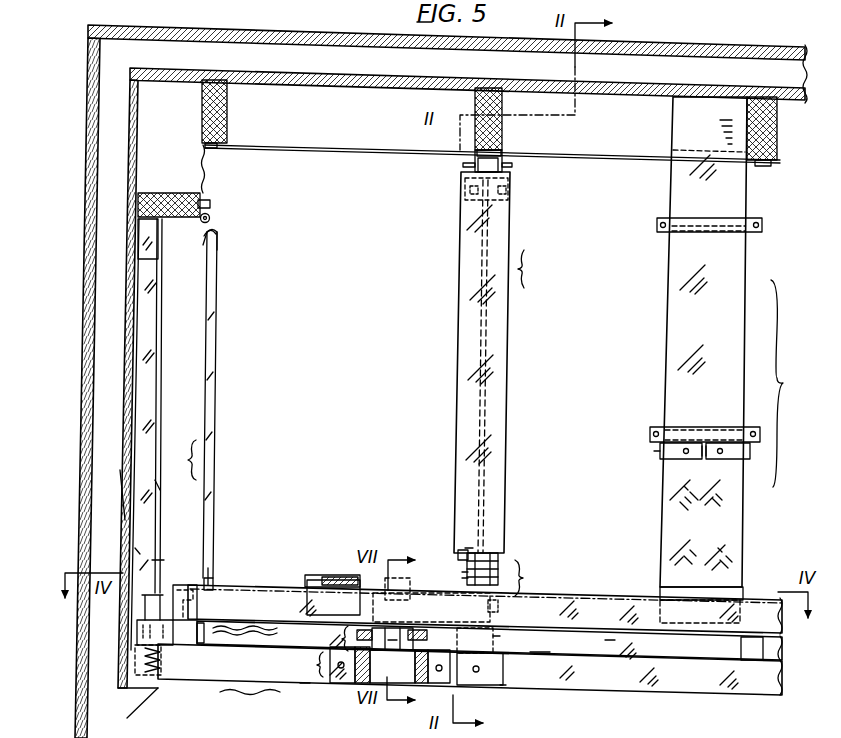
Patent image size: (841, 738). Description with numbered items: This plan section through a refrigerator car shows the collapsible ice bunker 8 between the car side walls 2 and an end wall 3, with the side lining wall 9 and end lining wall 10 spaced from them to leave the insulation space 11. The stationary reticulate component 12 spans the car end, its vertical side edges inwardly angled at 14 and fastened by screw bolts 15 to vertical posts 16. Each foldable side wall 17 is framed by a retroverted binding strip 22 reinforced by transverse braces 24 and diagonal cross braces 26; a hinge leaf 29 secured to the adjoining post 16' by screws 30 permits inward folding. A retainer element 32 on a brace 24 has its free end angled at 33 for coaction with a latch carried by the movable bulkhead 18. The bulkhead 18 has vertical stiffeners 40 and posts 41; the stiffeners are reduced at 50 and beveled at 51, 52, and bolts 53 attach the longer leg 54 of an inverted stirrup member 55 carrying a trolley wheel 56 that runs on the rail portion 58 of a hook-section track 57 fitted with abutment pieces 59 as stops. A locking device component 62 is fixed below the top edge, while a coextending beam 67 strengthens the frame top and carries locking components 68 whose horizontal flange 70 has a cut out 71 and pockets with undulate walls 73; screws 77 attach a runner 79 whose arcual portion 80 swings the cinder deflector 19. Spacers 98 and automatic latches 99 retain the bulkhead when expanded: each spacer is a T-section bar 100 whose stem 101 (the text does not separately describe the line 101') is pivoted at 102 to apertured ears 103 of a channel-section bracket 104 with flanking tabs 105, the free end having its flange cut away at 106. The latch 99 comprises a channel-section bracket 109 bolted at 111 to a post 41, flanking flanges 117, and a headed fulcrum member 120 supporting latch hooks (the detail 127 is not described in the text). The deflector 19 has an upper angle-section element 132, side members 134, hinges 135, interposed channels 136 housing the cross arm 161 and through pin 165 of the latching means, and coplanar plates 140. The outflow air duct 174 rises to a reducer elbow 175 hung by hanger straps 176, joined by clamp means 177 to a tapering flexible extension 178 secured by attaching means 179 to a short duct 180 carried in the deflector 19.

The side walls 2 is at (85, 373).
The end wall 3 is at (318, 27).
The collapsible bunker 8 is at (787, 383).
The side lining wall 9 is at (122, 493).
The end lining wall 10 is at (348, 90).
The insulation space 11 is at (457, 44).
The stationary end wall or reticulate component 12 is at (345, 152).
The inwardly angled side edges 14 is at (200, 152).
The screw bolts 15 is at (217, 150).
The vertical posts 16 is at (507, 120).
The vertical post 16' is at (164, 239).
The side walls 17 is at (179, 460).
The movable bulkhead 18 is at (470, 679).
The cinder deflector 19 is at (489, 640).
The binding strip 22 is at (200, 378).
The transverse braces 24 is at (220, 350).
The cross braces 26 is at (202, 246).
The hinge leaf 29 is at (195, 195).
The screws 30 is at (208, 196).
The retainer element 32 is at (213, 570).
The outwardly angled free end 33 is at (213, 584).
The vertical stiffeners 40 is at (190, 585).
The posts 41 is at (500, 640).
The reduced parts 50 is at (197, 612).
The bevel 51 is at (172, 642).
The bevel 52 is at (160, 562).
The bolts 53 is at (204, 644).
The longer leg 54 is at (160, 672).
The inverted stirrup member 55 is at (135, 655).
The trolley wheel 56 is at (145, 608).
The track 57 is at (137, 553).
The rail portion 58 is at (160, 486).
The abutment pieces 59 is at (142, 705).
The locking device component 62 is at (373, 638).
The beam 67 is at (306, 684).
The locking device components 68 is at (325, 665).
The horizontal flange 70 is at (335, 684).
The cut out 71 is at (392, 666).
The undulate wall 73 is at (360, 680).
The screws 77 is at (480, 668).
The runner 79 is at (502, 686).
The arcual portion 80 is at (538, 658).
The spacers 98 is at (534, 269).
The automatic latches 99 is at (526, 578).
The T-section bar 100 is at (456, 345).
The stem 101 is at (517, 366).
The column core line 101' is at (521, 366).
The pivot 102 is at (465, 190).
The apertured ears 103 is at (470, 200).
The channel-section bracket 104 is at (503, 160).
The flanking tabs 105 is at (463, 165).
The cut away flange portion 106 is at (466, 548).
The channel-section bracket 109 is at (431, 607).
The bolts 111 is at (498, 608).
The flanking flanges 117 is at (458, 556).
The headed fulcrum member 120 is at (498, 558).
The foot bolts 127 is at (462, 575).
The upper angle-section element 132 is at (562, 596).
The side members 134 is at (241, 637).
The hinges 135 is at (326, 576).
The interposed channels 136 is at (336, 597).
The coplanar plates 140 is at (618, 637).
The cross arm 161 is at (400, 584).
The through pin 165 is at (459, 640).
The outflow air duct 174 is at (672, 143).
The reducer elbow 175 is at (680, 124).
The hanger straps 176 is at (656, 226).
The clamp means 177 is at (660, 451).
The tapering flexible extension 178 is at (668, 505).
The attaching means 179 is at (660, 590).
The short duct 180 is at (700, 614).